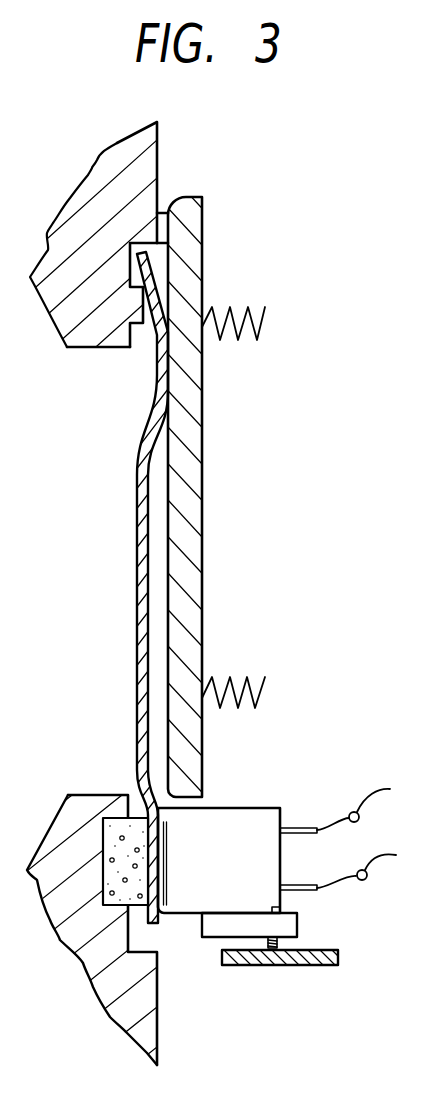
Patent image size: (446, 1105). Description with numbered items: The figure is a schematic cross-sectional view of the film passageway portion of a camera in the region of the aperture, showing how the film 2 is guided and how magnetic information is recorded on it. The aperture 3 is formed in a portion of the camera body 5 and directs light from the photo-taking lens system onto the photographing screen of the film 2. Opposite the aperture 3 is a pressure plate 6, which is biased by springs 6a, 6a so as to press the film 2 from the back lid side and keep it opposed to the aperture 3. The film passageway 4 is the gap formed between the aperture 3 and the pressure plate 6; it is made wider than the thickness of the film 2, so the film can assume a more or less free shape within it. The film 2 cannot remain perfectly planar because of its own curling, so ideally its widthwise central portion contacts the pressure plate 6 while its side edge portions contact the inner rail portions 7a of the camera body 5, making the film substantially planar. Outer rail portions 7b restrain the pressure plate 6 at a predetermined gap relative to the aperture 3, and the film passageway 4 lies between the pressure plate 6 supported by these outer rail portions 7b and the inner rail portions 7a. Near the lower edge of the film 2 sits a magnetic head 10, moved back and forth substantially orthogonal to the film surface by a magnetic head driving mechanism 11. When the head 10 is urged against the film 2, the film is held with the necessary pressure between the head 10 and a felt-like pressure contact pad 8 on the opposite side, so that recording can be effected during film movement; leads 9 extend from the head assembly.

The film 2 is at (142, 513).
The aperture 3 is at (110, 347).
The film passageway 4 is at (151, 557).
The camera body 5 is at (102, 178).
The pressure plate 6 is at (197, 405).
The springs 6a is at (243, 310).
The inner rail portions 7a is at (97, 263).
The outer rail portions 7b is at (160, 228).
The pressure contact pad 8 is at (110, 853).
The leads 9 is at (445, 922).
The magnetic head 10 is at (255, 812).
The magnetic head driving mechanism 11 is at (349, 943).